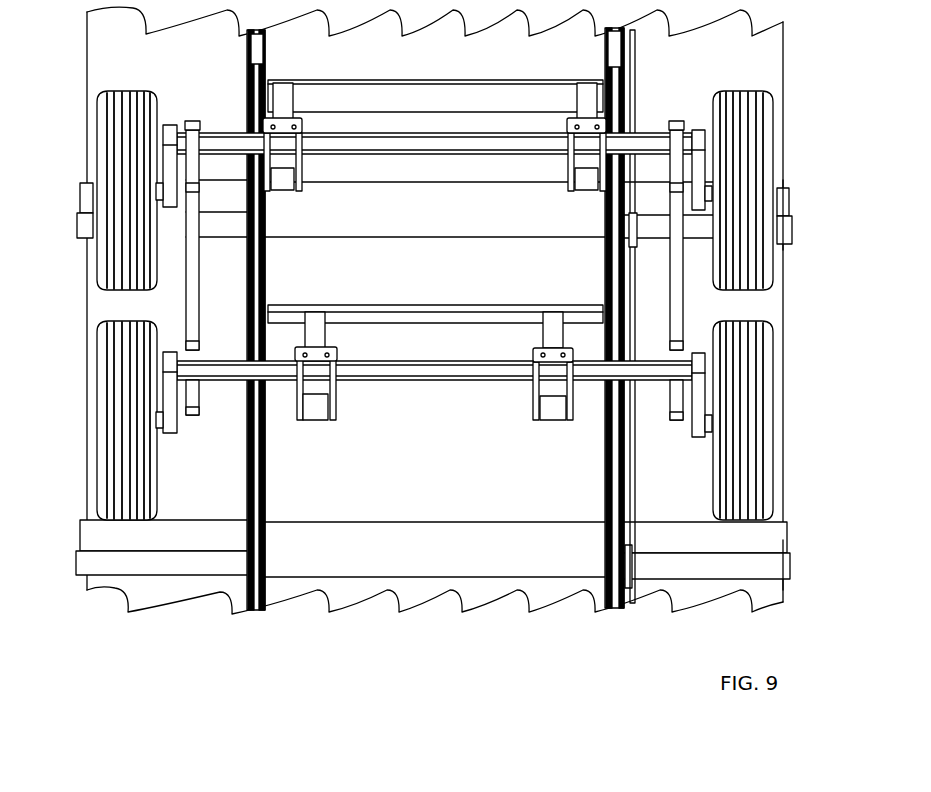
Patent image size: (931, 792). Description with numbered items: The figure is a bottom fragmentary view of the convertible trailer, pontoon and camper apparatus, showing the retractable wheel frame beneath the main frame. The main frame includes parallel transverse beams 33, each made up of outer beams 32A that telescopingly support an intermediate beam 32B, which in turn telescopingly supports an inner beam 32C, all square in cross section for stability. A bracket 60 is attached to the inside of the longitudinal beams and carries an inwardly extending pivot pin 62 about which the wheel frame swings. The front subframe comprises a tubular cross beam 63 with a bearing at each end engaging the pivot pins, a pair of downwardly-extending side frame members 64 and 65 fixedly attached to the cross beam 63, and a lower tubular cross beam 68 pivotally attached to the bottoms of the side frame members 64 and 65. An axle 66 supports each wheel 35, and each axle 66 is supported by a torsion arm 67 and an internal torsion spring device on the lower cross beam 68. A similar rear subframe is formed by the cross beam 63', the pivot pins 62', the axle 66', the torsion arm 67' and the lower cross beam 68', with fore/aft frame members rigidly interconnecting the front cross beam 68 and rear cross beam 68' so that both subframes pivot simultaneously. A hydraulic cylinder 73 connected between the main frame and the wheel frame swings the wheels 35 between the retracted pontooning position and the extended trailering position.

The outer beam 32A is at (527, 221).
The intermediate beam 32B is at (218, 197).
The inner beam 32C is at (78, 197).
The transverse beam 33 is at (795, 196).
The wheel 35 is at (133, 292).
The bracket 60 is at (267, 275).
The pivot pin 62 is at (435, 345).
The pivot pin of rear subframe 62' is at (435, 119).
The tubular cross beam 63 is at (435, 293).
The tubular cross beam of rear subframe 63' is at (435, 80).
The side frame member 64 is at (315, 412).
The side frame member 65 is at (553, 415).
The axle 66 is at (434, 450).
The axle of rear subframe 66' is at (437, 234).
The torsion arm 67 is at (434, 406).
The torsion arm of rear subframe 67' is at (434, 131).
The lower tubular cross beam 68 is at (434, 407).
The lower tubular cross beam of rear subframe 68' is at (434, 178).
The hydraulic cylinder 73 is at (200, 330).